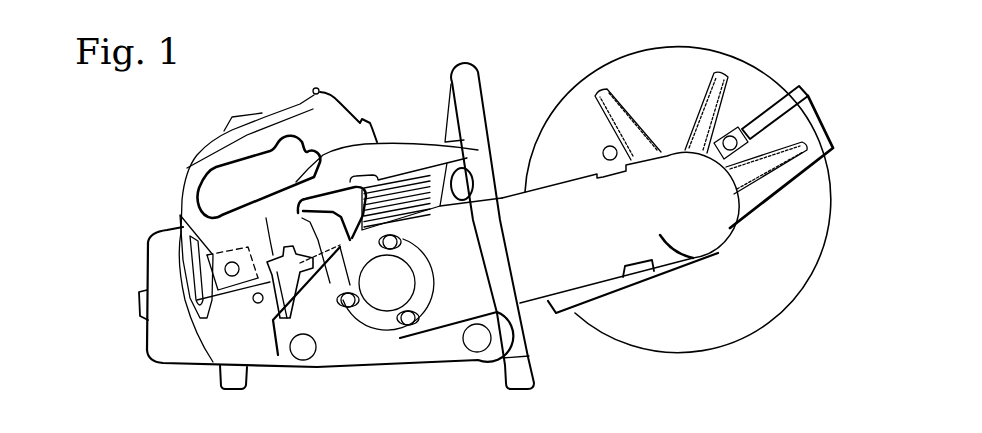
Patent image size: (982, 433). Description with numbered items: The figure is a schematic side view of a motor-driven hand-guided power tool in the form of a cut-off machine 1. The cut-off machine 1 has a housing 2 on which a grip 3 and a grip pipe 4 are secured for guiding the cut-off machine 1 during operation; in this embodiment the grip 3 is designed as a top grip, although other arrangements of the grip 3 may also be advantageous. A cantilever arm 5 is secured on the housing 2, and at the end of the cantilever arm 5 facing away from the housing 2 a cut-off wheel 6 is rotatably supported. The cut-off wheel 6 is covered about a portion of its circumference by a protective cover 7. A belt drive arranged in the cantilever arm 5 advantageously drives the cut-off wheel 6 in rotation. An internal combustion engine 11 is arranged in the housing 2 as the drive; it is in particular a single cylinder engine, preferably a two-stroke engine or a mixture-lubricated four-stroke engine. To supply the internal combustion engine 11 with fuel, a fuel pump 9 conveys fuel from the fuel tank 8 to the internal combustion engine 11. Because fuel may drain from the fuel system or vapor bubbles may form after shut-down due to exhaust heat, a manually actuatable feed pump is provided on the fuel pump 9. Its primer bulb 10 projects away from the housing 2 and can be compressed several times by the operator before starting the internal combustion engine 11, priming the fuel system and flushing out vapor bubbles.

The cut-off machine 1 is at (800, 351).
The housing 2 is at (390, 155).
The grip 3 is at (220, 158).
The grip pipe 4 is at (474, 104).
The cantilever arm 5 is at (601, 267).
The cut-off wheel 6 is at (779, 295).
The protective cover 7 is at (672, 60).
The fuel tank 8 is at (233, 332).
The fuel pump 9 is at (217, 262).
The primer bulb 10 is at (227, 273).
The internal combustion engine 11 is at (375, 186).